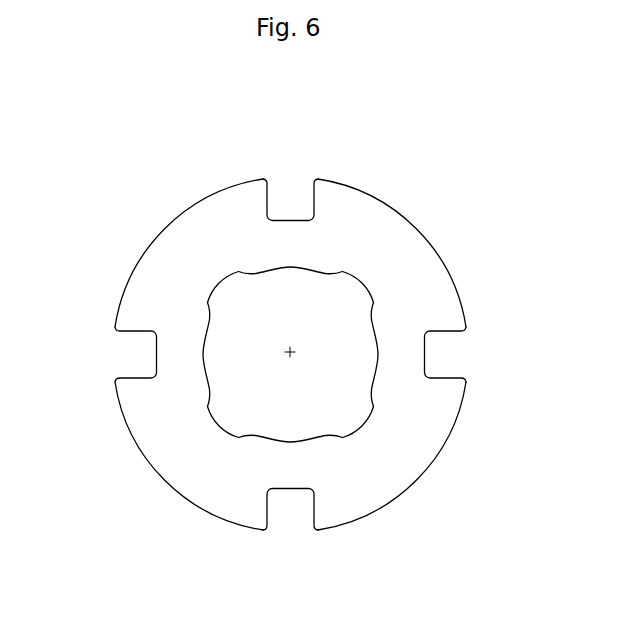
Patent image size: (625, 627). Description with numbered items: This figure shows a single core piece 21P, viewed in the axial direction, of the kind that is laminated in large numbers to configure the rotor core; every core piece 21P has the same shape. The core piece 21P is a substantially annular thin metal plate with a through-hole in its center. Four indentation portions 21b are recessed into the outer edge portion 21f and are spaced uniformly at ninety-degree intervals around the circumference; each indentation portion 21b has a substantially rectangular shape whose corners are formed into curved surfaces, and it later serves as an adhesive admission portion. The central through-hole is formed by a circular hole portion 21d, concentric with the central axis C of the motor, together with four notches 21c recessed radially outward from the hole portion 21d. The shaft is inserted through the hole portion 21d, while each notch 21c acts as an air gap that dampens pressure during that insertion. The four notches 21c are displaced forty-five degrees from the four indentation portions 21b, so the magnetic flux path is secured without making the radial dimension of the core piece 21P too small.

The core piece 21P is at (143, 213).
The indentation portion 21b is at (293, 187).
The outer edge portion 21f is at (447, 258).
The hole portion 21d is at (285, 269).
The notch 21c is at (355, 429).
The central axis C is at (289, 355).